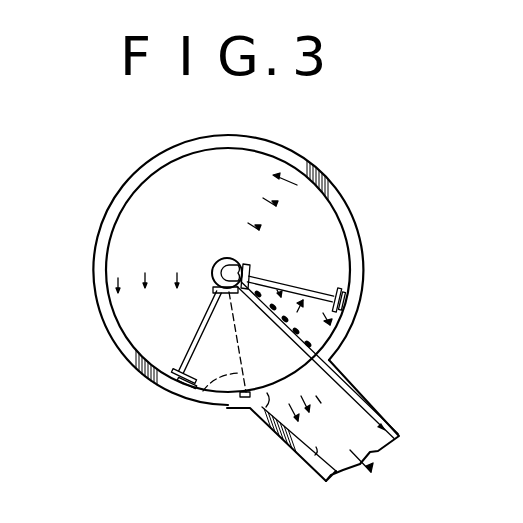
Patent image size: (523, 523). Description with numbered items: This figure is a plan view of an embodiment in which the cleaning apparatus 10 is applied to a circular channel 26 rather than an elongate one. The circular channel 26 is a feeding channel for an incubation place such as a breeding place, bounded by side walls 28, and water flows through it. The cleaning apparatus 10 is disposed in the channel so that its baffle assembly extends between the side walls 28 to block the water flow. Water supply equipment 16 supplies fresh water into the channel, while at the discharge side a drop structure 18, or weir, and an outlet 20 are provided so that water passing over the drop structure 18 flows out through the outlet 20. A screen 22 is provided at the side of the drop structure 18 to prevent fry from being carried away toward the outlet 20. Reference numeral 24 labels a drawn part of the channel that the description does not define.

The cleaning apparatus 10 is at (279, 277).
The water supply equipment 16 is at (283, 342).
The drop structure 18 is at (266, 426).
The outlet 20 is at (316, 455).
The screen 22 is at (218, 405).
The drum inner wall 24 is at (135, 209).
The circular channel 26 is at (338, 196).
The side walls 28 is at (218, 262).